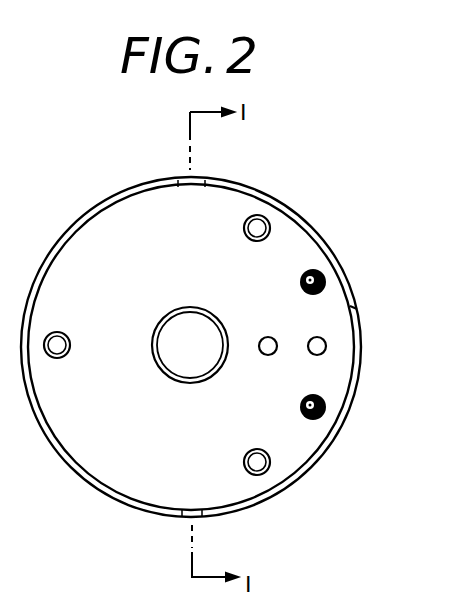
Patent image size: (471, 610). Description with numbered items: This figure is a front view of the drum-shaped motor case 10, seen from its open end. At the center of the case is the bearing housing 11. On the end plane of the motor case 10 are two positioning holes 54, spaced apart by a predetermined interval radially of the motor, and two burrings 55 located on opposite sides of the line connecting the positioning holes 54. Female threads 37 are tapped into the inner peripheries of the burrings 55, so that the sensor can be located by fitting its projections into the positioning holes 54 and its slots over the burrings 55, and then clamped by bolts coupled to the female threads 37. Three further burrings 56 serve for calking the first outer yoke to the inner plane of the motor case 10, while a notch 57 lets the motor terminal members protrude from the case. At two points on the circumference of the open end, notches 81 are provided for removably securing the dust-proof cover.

The motor case 10 is at (318, 222).
The bearing housing 11 is at (213, 316).
The female threads 37 is at (300, 282).
The positioning holes 54 is at (275, 339).
The burrings 55 is at (326, 283).
The burrings 56 is at (244, 231).
The notch 57 is at (351, 392).
The notches 81 is at (196, 181).